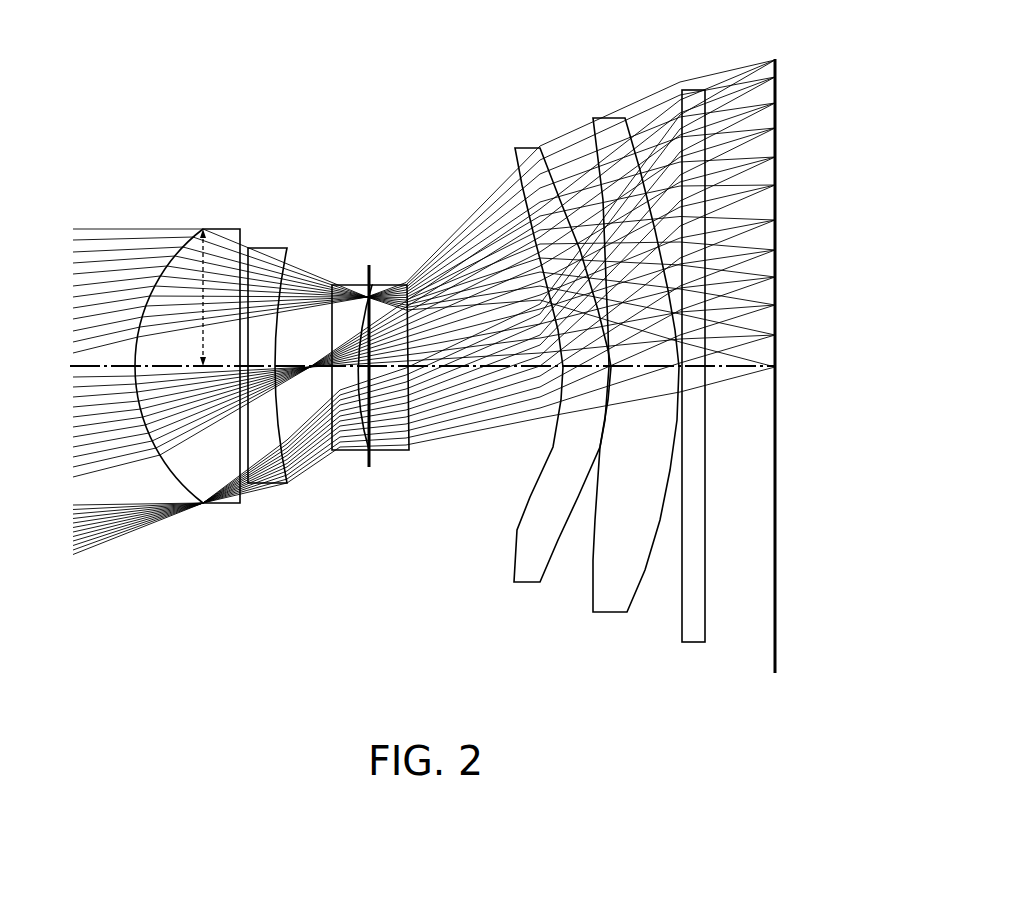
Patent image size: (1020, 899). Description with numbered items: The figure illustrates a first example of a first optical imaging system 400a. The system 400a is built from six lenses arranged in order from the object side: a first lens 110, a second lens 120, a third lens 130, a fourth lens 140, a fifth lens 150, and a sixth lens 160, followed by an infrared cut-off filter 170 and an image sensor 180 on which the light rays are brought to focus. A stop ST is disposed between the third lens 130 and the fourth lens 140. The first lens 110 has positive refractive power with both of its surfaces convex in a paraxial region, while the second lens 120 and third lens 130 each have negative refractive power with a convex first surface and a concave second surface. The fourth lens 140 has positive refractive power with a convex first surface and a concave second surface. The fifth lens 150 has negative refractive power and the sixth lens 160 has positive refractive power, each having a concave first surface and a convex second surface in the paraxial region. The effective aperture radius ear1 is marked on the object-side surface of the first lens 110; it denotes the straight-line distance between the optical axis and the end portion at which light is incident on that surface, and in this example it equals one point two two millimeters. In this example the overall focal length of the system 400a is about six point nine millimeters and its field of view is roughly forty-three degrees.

The first optical imaging system 400a is at (340, 80).
The first lens 110 is at (226, 228).
The second lens 120 is at (268, 246).
The third lens 130 is at (348, 283).
The fourth lens 140 is at (398, 283).
The fifth lens 150 is at (527, 146).
The sixth lens 160 is at (611, 116).
The infrared cut-off filter 170 is at (697, 88).
The image sensor 180 is at (777, 86).
The stop ST is at (372, 470).
The effective aperture radius ear1 is at (218, 288).